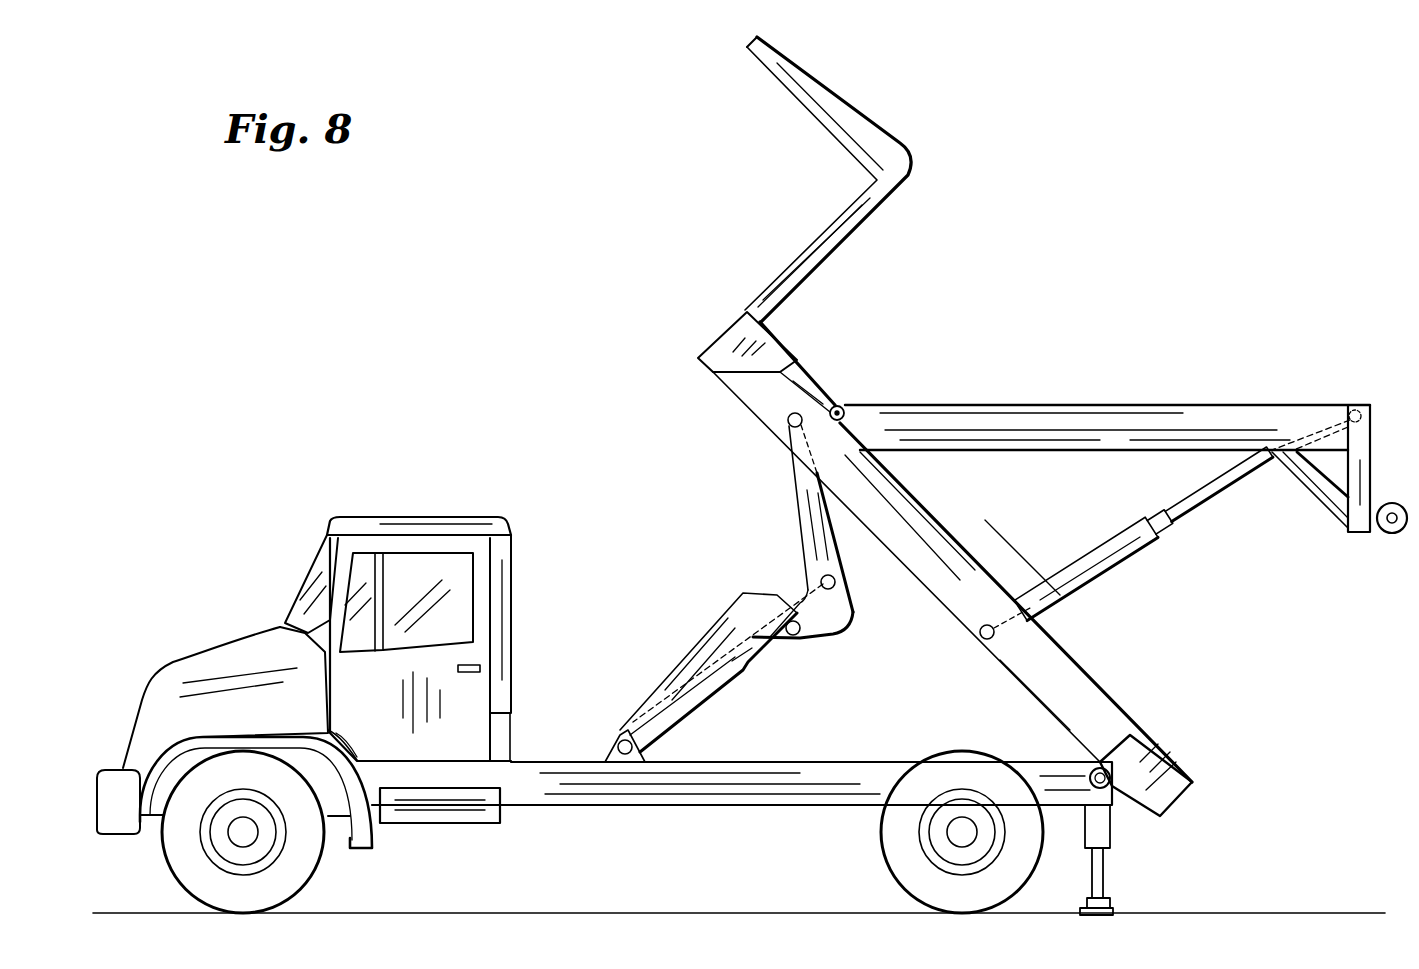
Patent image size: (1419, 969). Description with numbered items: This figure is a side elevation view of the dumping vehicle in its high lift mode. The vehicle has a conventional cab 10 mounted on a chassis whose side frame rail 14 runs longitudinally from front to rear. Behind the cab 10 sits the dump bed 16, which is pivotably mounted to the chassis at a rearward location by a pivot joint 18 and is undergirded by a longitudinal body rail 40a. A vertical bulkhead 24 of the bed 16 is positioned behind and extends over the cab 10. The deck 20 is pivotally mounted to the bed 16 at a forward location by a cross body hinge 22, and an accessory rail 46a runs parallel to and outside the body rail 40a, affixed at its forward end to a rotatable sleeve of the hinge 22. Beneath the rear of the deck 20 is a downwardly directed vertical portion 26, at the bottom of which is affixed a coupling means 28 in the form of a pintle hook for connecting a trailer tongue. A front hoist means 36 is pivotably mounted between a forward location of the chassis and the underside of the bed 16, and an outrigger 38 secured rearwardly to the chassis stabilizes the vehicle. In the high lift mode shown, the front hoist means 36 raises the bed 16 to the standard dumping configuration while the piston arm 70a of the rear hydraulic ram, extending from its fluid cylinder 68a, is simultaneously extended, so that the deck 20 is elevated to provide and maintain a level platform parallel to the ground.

The cab 10 is at (275, 602).
The side frame rail 14 is at (778, 800).
The dump bed 16 is at (713, 328).
The pivot joint 18 is at (1092, 771).
The deck 20 is at (1127, 412).
The cross body hinge 22 is at (841, 405).
The vertical bulkhead 24 is at (875, 212).
The vertical portion 26 is at (1374, 438).
The coupling means 28 is at (1388, 534).
The front hoist means 36 is at (700, 640).
The outrigger 38 is at (1102, 830).
The longitudinal body rail 40a is at (958, 594).
The accessory rail 46a is at (1108, 437).
The fluid cylinder 68a is at (1128, 556).
The piston arm 70a is at (1223, 490).